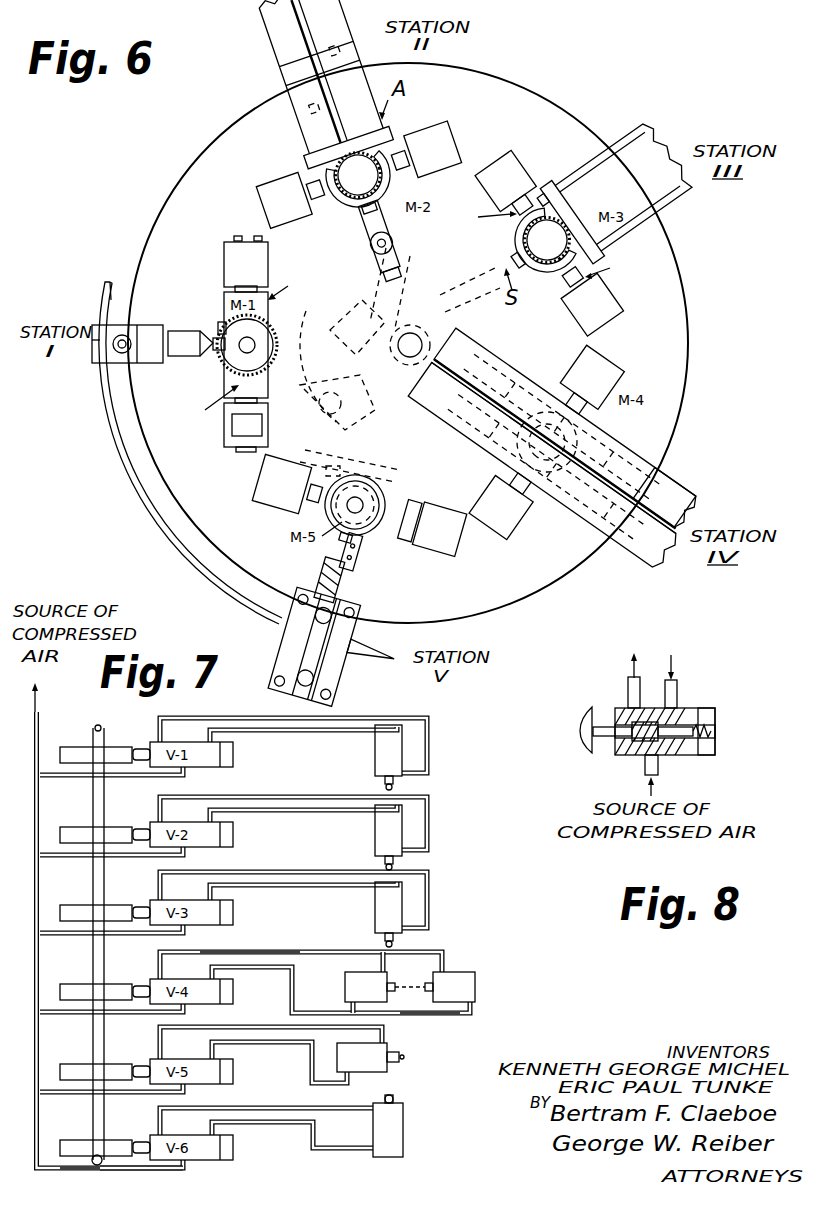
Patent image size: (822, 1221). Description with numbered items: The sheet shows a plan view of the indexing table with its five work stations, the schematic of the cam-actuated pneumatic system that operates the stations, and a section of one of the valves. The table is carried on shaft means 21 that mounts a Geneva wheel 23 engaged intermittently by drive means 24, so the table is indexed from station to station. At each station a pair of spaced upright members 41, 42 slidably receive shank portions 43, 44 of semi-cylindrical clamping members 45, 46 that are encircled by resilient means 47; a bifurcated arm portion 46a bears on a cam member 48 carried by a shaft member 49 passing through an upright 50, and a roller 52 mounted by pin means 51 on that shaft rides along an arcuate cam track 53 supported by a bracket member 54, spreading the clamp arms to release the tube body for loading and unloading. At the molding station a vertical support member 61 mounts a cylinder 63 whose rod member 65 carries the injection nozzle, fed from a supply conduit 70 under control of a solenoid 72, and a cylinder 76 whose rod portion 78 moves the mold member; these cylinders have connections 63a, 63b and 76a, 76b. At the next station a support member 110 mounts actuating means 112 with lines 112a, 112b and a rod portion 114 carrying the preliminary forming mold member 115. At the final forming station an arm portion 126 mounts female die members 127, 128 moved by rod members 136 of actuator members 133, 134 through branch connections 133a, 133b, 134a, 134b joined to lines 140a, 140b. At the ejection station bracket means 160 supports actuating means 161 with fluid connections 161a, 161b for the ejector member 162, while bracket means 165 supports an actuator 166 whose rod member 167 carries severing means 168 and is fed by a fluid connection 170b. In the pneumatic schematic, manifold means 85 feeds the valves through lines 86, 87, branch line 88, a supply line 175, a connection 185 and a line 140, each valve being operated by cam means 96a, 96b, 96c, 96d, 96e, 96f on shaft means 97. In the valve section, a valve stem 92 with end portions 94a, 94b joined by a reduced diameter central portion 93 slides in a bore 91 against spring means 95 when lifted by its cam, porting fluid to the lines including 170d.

In FIG. 6, the shaft means 21 is at (412, 333).
In FIG. 6, the Geneva wheel 23 is at (435, 288).
In FIG. 6, the drive means 24 is at (342, 358).
In FIG. 6, the upright member 41 is at (224, 262).
In FIG. 6, the upright member 42 is at (224, 432).
In FIG. 6, the shank portion 43 is at (240, 236).
In FIG. 6, the shank portion 44 is at (234, 450).
In FIG. 6, the semi-cylindrical clamping member 45 is at (453, 276).
In FIG. 6, the semi-cylindrical clamping member 46 is at (346, 315).
In FIG. 6, the bifurcated arm portion 46a is at (218, 350).
In FIG. 6, the resilient means 47 is at (272, 332).
In FIG. 6, the cam member 48 is at (181, 330).
In FIG. 6, the shaft member 49 is at (190, 358).
In FIG. 6, the upright 50 is at (140, 326).
In FIG. 6, the pin means 51 is at (112, 296).
In FIG. 6, the roller 52 is at (122, 354).
In FIG. 6, the cam track 53 is at (110, 421).
In FIG. 6, the bracket member 54 is at (98, 362).
In FIG. 6, the vertical support member 61 is at (300, 68).
In FIG. 6, the cylinder 63 is at (366, 185).
In FIG. 7, the cylinder 63 is at (375, 750).
In FIG. 6, the connection 63a is at (358, 225).
In FIG. 7, the connection 63a is at (258, 732).
In FIG. 8, the connection 63a is at (678, 690).
In FIG. 7, the connection 63b is at (196, 718).
In FIG. 8, the connection 63b is at (628, 684).
In FIG. 7, the rod member 65 is at (383, 783).
In FIG. 6, the supply conduit 70 is at (394, 245).
In FIG. 6, the solenoid 72 is at (370, 252).
In FIG. 6, the cylinder 76 is at (312, 150).
In FIG. 7, the cylinder 76 is at (375, 825).
In FIG. 6, the connection 76a is at (300, 128).
In FIG. 7, the connection 76a is at (258, 811).
In FIG. 7, the connection 76b is at (268, 797).
In FIG. 7, the rod portion 78 is at (383, 862).
In FIG. 7, the manifold means 85 is at (42, 722).
In FIG. 7, the line 86 is at (127, 852).
In FIG. 7, the line 87 is at (127, 931).
In FIG. 7, the branch line 88 is at (125, 1010).
In FIG. 8, the bore 91 is at (648, 719).
In FIG. 6, the valve stem 92 is at (330, 466).
In FIG. 7, the valve stem 92 is at (140, 748).
In FIG. 8, the valve stem 92 is at (601, 723).
In FIG. 8, the reduced diameter central portion 93 is at (645, 758).
In FIG. 8, the end portion 94a is at (606, 756).
In FIG. 8, the end portion 94b is at (704, 752).
In FIG. 8, the spring means 95 is at (712, 712).
In FIG. 6, the cam means 96a is at (247, 425).
In FIG. 7, the cam means 96a is at (68, 748).
In FIG. 8, the cam means 96a is at (580, 731).
In FIG. 7, the cam 96b is at (66, 827).
In FIG. 7, the cam means 96c is at (66, 905).
In FIG. 7, the cam means 96d is at (66, 984).
In FIG. 7, the cam means 96e is at (66, 1064).
In FIG. 7, the rotary cam 96f is at (70, 1140).
In FIG. 6, the shaft means 97 is at (337, 405).
In FIG. 7, the shaft means 97 is at (100, 724).
In FIG. 6, the support member 110 is at (634, 180).
In FIG. 6, the actuating means 112 is at (560, 250).
In FIG. 7, the actuating means 112 is at (375, 905).
In FIG. 6, the actuator line 112a is at (518, 258).
In FIG. 7, the actuator line 112a is at (256, 886).
In FIG. 7, the actuator line 112b is at (258, 872).
In FIG. 7, the rod portion 114 is at (383, 940).
In FIG. 6, the mold member 115 is at (522, 240).
In FIG. 6, the arm portion 126 is at (600, 528).
In FIG. 6, the female die member 127 is at (537, 372).
In FIG. 6, the female die member 128 is at (606, 443).
In FIG. 6, the actuator member 133 is at (500, 354).
In FIG. 7, the actuator member 133 is at (345, 985).
In FIG. 7, the branch connection 133a is at (352, 1007).
In FIG. 7, the branch connection 133b is at (386, 965).
In FIG. 6, the actuator member 134 is at (672, 490).
In FIG. 7, the actuator member 134 is at (475, 987).
In FIG. 7, the branch connection 134a is at (432, 1016).
In FIG. 7, the branch connection 134b is at (442, 968).
In FIG. 7, the rod member 136 is at (406, 990).
In FIG. 7, the branch line 140 is at (127, 1014).
In FIG. 7, the line 140a is at (290, 976).
In FIG. 7, the line 140b is at (228, 952).
In FIG. 6, the bracket means 160 is at (372, 460).
In FIG. 6, the actuating means 161 is at (410, 505).
In FIG. 7, the actuating means 161 is at (403, 1133).
In FIG. 7, the fluid connection 161a is at (318, 1150).
In FIG. 7, the fluid connection 161b is at (322, 1111).
In FIG. 6, the ejector member 162 is at (358, 546).
In FIG. 7, the ejector member 162 is at (395, 1098).
In FIG. 6, the bracket means 165 is at (336, 708).
In FIG. 6, the actuator 166 is at (338, 637).
In FIG. 7, the actuator 166 is at (367, 1072).
In FIG. 6, the rod member 167 is at (346, 582).
In FIG. 7, the rod member 167 is at (400, 1057).
In FIG. 6, the severing means 168 is at (328, 562).
In FIG. 7, the fluid connection 170b is at (235, 1022).
In FIG. 7, the air line 170d is at (265, 1044).
In FIG. 7, the supply line 175 is at (118, 1092).
In FIG. 7, the connection 185 is at (185, 1168).